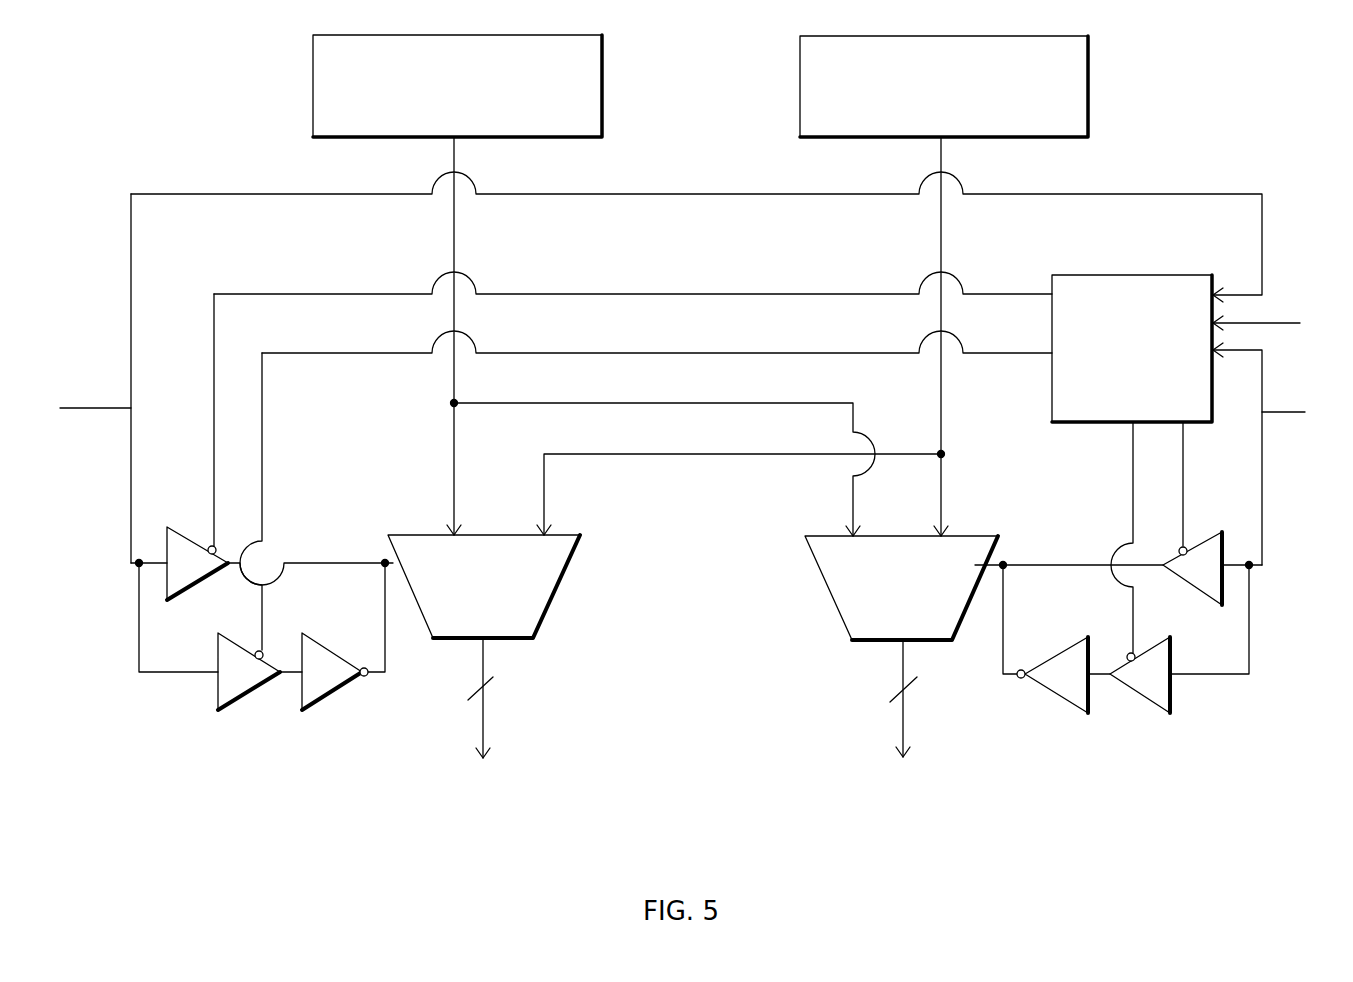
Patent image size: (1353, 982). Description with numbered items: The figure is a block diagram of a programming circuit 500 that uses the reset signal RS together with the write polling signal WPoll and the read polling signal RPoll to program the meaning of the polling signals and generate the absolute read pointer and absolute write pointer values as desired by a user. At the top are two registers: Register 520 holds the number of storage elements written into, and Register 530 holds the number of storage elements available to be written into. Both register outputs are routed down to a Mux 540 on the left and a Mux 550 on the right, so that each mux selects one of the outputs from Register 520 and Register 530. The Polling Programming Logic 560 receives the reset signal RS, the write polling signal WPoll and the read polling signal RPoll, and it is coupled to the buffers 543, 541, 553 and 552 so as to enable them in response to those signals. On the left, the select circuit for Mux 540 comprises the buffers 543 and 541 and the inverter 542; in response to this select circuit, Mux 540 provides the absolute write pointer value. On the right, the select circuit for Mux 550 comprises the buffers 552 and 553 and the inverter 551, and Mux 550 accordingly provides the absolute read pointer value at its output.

The programming circuit 500 is at (683, 448).
The register 520 is at (457, 86).
The register 530 is at (944, 86).
The mux 540 is at (484, 586).
The buffer 541 is at (249, 671).
The inverter 542 is at (335, 671).
The buffer 543 is at (197, 563).
The mux 550 is at (901, 588).
The inverter 551 is at (1052, 675).
The buffer 552 is at (1140, 675).
The buffer 553 is at (1192, 568).
The polling programming logic 560 is at (1132, 348).